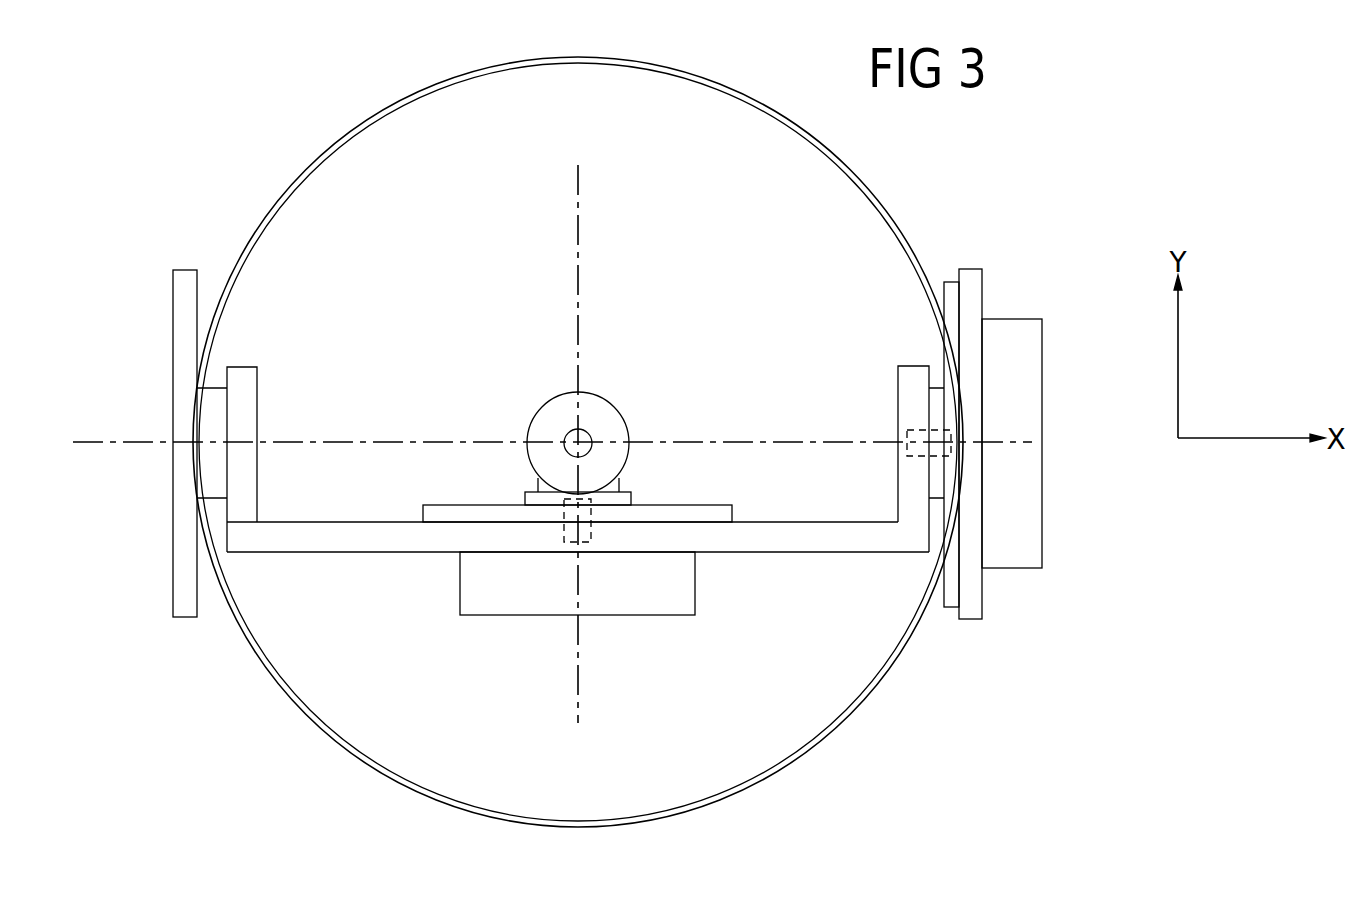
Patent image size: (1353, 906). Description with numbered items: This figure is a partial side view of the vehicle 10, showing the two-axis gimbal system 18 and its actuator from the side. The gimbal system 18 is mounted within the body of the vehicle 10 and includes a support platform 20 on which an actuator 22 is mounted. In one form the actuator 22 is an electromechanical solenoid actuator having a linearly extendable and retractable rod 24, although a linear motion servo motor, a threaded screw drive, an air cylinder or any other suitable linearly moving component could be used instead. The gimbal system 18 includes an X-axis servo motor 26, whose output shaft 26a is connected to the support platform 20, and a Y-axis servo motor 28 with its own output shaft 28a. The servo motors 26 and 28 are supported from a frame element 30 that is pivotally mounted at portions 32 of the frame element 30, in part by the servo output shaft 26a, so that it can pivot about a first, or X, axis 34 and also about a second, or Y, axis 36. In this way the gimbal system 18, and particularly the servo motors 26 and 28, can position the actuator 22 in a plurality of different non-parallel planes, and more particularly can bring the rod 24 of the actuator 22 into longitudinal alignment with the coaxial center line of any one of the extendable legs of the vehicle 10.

The vehicle 10 is at (277, 113).
The two-axis gimbal system 18 is at (578, 497).
The support platform 20 is at (527, 493).
The actuator 22 is at (539, 408).
The rod 24 is at (593, 431).
The X-axis servo motor 26 is at (1042, 523).
The output shaft 26a is at (907, 437).
The Y-axis servo motor 28 is at (517, 615).
The output shaft 28a is at (592, 510).
The frame element 30 is at (807, 521).
The portions 32 is at (258, 388).
The first axis 34 is at (100, 442).
The second axis 36 is at (578, 242).